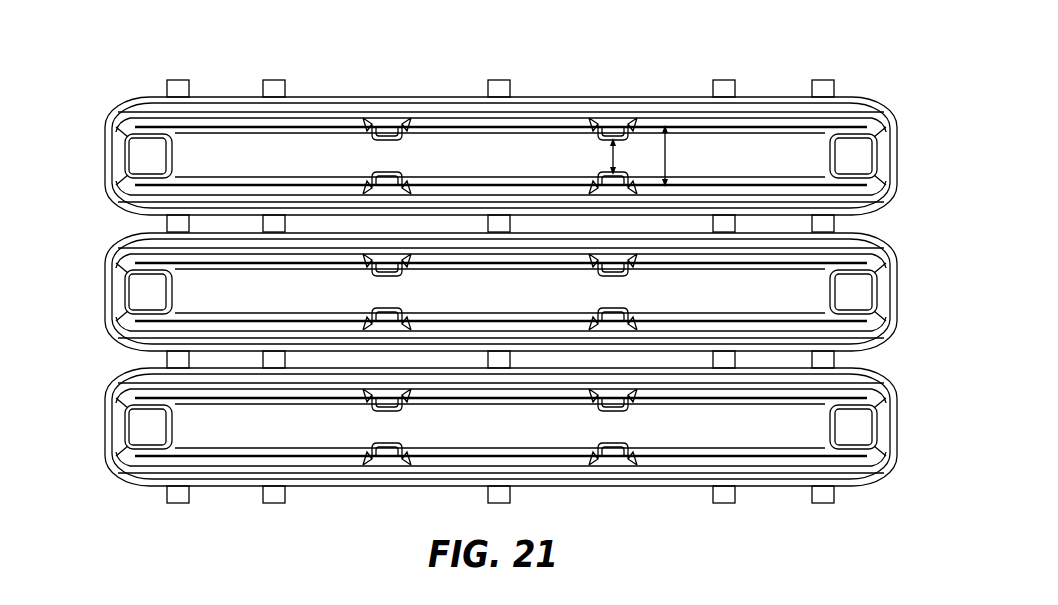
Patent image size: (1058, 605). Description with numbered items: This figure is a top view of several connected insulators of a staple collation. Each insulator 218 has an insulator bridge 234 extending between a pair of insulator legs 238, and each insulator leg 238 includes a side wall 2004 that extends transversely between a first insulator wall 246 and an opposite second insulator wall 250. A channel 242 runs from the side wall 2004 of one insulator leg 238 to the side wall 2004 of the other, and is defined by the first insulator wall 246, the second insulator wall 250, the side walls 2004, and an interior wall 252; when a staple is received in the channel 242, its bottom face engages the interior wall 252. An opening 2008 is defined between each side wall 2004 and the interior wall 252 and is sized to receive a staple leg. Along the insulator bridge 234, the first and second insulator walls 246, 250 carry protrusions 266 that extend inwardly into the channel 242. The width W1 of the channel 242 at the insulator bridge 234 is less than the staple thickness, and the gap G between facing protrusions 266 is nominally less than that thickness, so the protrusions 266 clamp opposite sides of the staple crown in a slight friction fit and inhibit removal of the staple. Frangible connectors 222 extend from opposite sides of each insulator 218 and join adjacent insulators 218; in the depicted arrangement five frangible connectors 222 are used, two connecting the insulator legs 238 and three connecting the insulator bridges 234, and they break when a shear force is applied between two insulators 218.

The insulator leg 238 is at (130, 108).
The first insulator wall 246 is at (233, 96).
The insulator 218 is at (347, 107).
The channel 242 is at (448, 148).
The interior wall 252 is at (516, 167).
The protrusion 266 is at (618, 183).
The side wall 2004 is at (132, 157).
The opening 2008 is at (130, 140).
The second insulator wall 250 is at (163, 197).
The frangible connector 222 is at (177, 224).
The insulator bridge 234 is at (227, 484).
The gap G is at (608, 157).
The width of the channel W1 is at (673, 155).